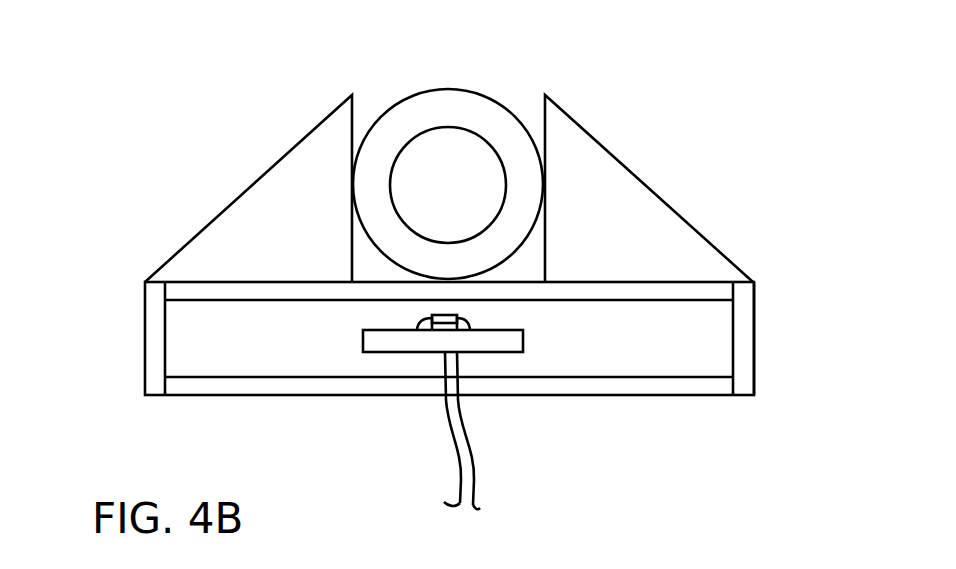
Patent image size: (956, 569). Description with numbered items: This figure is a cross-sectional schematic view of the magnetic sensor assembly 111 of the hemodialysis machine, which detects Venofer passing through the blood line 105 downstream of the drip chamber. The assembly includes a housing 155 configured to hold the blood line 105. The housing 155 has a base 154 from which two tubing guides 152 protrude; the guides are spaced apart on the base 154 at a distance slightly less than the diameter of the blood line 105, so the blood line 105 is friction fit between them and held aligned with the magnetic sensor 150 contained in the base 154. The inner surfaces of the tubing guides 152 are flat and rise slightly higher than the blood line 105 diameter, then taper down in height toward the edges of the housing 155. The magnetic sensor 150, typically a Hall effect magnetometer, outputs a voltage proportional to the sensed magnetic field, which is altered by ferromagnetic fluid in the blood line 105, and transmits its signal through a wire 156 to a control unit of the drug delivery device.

The blood line 105 is at (490, 97).
The magnetic sensor assembly 111 is at (781, 277).
The magnetic sensor 150 is at (507, 348).
The tubing guides 152 is at (243, 188).
The base 154 is at (757, 347).
The housing 155 is at (146, 282).
The wire 156 is at (458, 442).